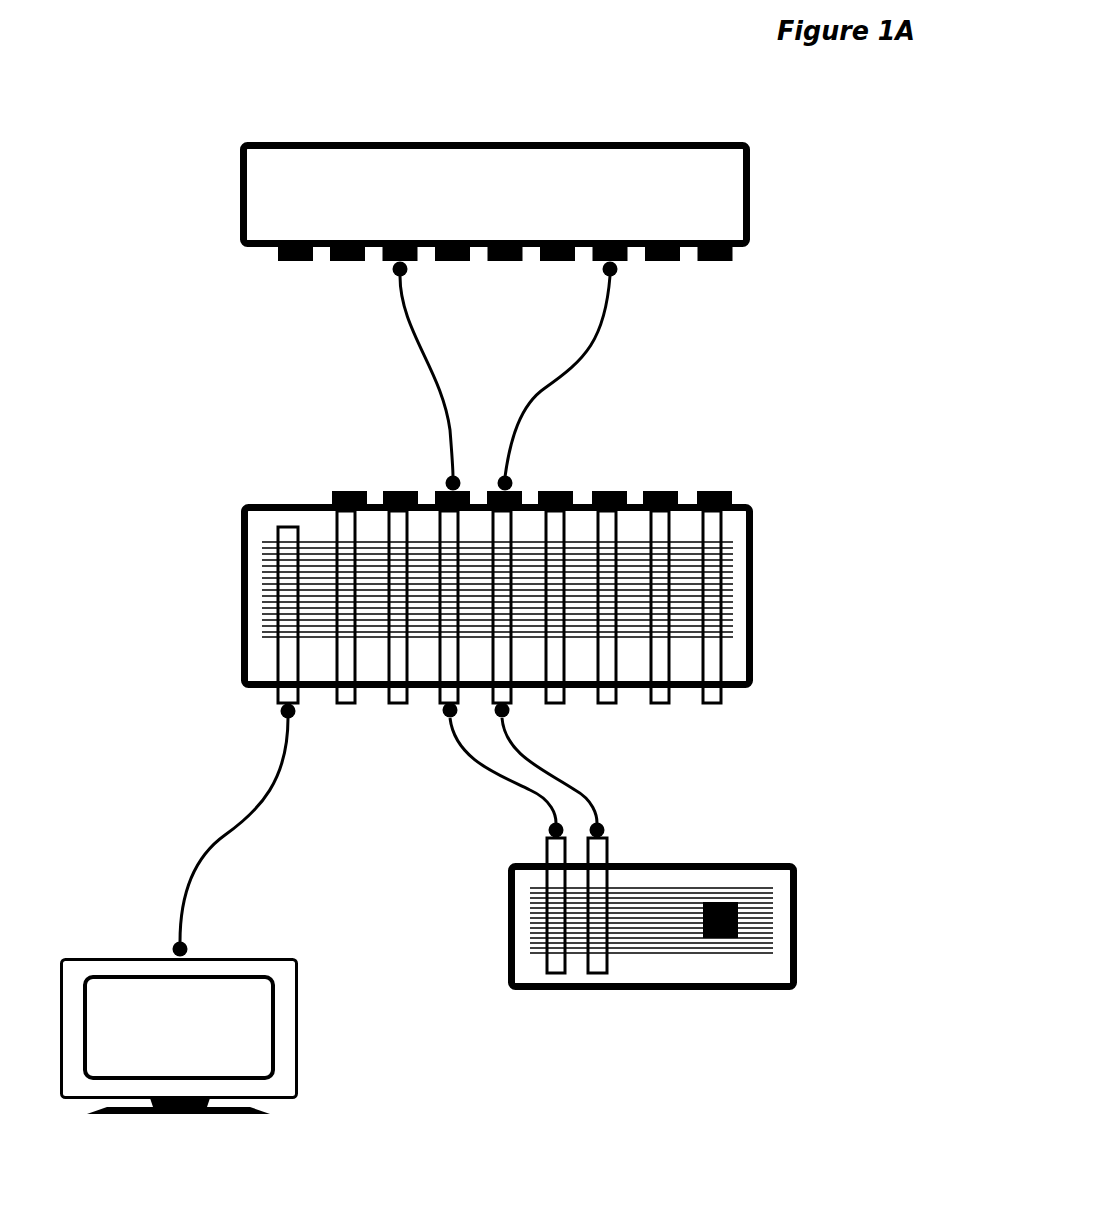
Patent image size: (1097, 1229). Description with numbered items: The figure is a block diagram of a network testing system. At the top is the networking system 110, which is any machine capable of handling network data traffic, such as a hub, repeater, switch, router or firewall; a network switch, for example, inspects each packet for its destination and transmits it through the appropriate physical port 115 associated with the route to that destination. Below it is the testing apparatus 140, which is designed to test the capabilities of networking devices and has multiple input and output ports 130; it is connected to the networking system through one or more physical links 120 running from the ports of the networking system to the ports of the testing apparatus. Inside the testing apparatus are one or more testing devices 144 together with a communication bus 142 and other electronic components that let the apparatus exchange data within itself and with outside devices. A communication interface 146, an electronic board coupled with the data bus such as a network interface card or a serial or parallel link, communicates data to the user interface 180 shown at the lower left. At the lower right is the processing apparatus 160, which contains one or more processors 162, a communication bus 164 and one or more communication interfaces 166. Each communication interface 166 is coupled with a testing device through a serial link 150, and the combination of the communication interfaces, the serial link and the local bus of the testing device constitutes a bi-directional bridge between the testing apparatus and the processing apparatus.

The networking system 110 is at (240, 177).
The physical port 115 is at (295, 262).
The physical link 120 is at (423, 377).
The input and output port 130 is at (714, 491).
The testing apparatus 140 is at (490, 599).
The communication bus 142 is at (263, 592).
The testing device 144 is at (553, 703).
The communication interface 146 is at (267, 612).
The serial link 150 is at (503, 773).
The processing apparatus 160 is at (696, 930).
The processor 162 is at (722, 902).
The communication bus 164 is at (652, 885).
The communication interface 166 is at (550, 975).
The user interface 180 is at (298, 1035).